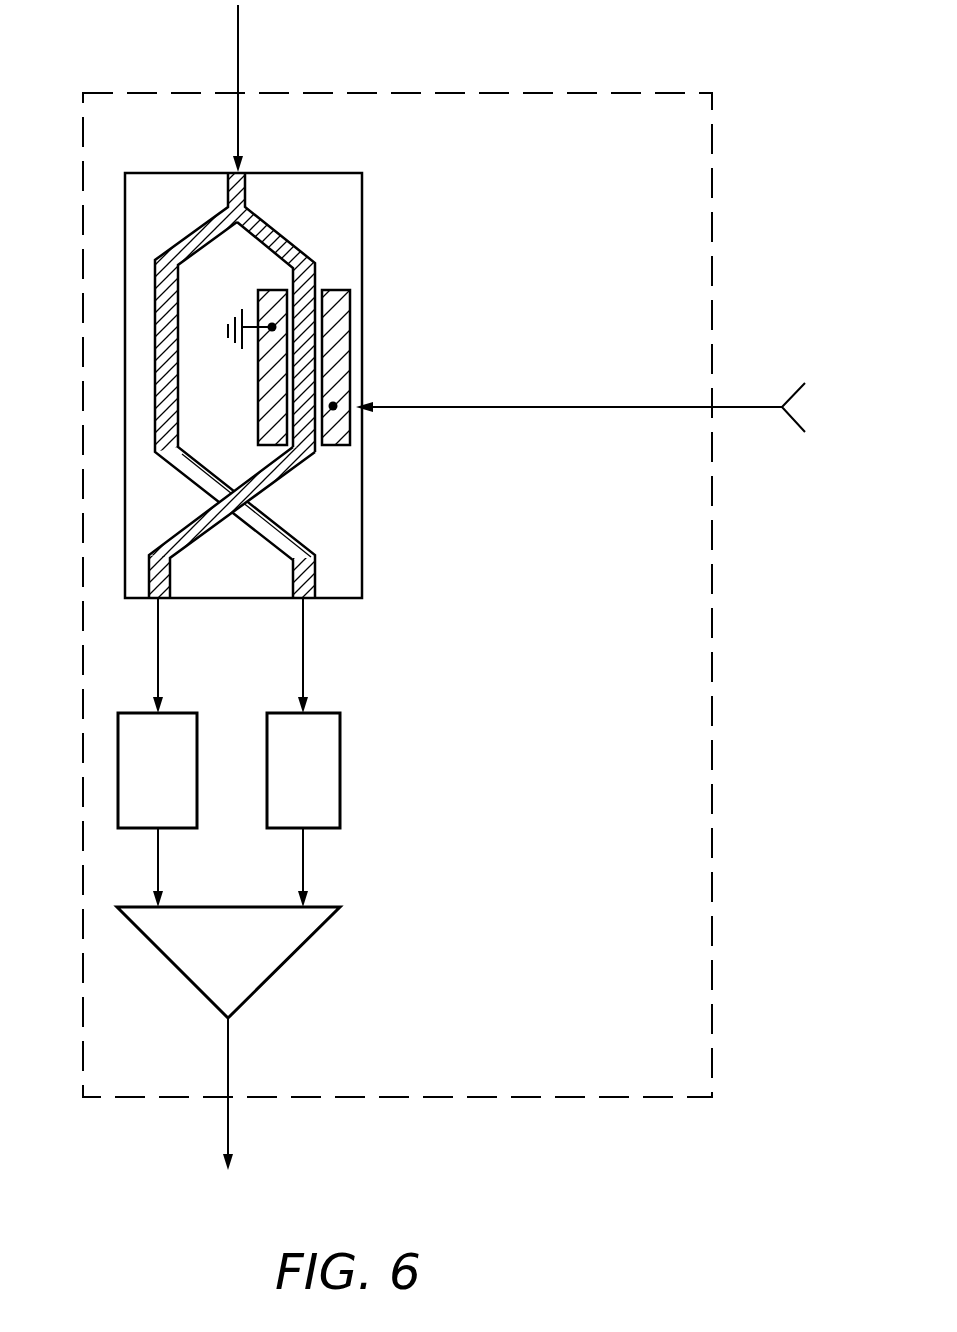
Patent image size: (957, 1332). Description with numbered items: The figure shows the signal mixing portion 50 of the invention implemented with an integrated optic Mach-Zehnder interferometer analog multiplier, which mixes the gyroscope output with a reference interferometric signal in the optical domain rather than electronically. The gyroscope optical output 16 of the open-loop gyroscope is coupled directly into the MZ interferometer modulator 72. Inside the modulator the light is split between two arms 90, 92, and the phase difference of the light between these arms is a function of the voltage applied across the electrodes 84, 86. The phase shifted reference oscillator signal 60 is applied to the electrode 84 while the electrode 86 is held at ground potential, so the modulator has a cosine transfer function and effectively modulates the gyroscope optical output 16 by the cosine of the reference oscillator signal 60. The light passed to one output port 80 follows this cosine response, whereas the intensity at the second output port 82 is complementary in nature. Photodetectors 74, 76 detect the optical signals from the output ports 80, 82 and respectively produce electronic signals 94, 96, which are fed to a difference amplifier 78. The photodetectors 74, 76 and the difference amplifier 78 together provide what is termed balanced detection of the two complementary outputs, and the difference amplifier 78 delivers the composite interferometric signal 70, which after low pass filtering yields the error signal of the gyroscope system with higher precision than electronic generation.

The gyroscope optical output 16 is at (238, 35).
The signal mixing portion 50 is at (661, 93).
The MZ interferometer modulator 72 is at (362, 192).
The arm 92 is at (188, 233).
The arm 90 is at (297, 247).
The electrode 84 is at (350, 292).
The electrode 86 is at (258, 410).
The phase shifted reference oscillator signal 60 is at (770, 380).
The output port 80 is at (158, 645).
The second output port 82 is at (303, 650).
The photodetector 74 is at (118, 778).
The photodetector 76 is at (340, 775).
The electronic signal 94 is at (158, 858).
The electronic signal 96 is at (303, 862).
The difference amplifier 78 is at (290, 960).
The composite interferometric signal 70 is at (228, 1108).